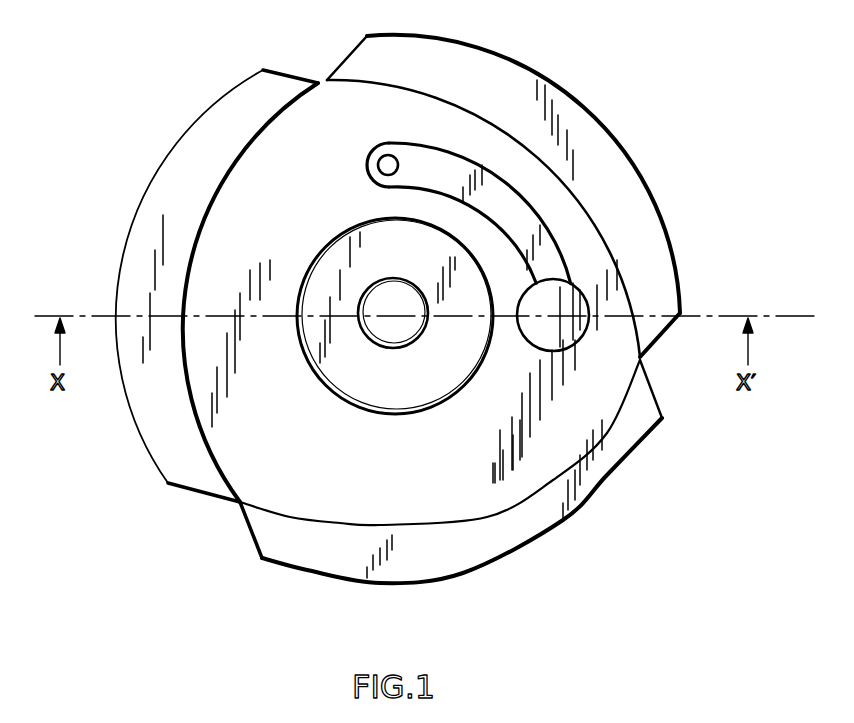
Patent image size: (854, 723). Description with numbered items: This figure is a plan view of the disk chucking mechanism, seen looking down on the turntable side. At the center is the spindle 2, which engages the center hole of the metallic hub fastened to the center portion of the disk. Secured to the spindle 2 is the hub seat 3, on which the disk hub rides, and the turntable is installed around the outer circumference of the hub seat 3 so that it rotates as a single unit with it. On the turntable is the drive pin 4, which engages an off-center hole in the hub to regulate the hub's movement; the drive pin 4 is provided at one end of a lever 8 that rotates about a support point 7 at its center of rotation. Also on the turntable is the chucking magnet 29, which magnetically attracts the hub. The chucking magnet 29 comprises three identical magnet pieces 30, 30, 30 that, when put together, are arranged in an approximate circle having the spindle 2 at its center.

The chucking magnet 29 is at (150, 182).
The magnet pieces 30 is at (593, 157).
The hub seat 3 is at (352, 252).
The spindle 2 is at (397, 336).
The drive pin 4 is at (567, 297).
The support point 7 is at (390, 163).
The lever 8 is at (480, 177).